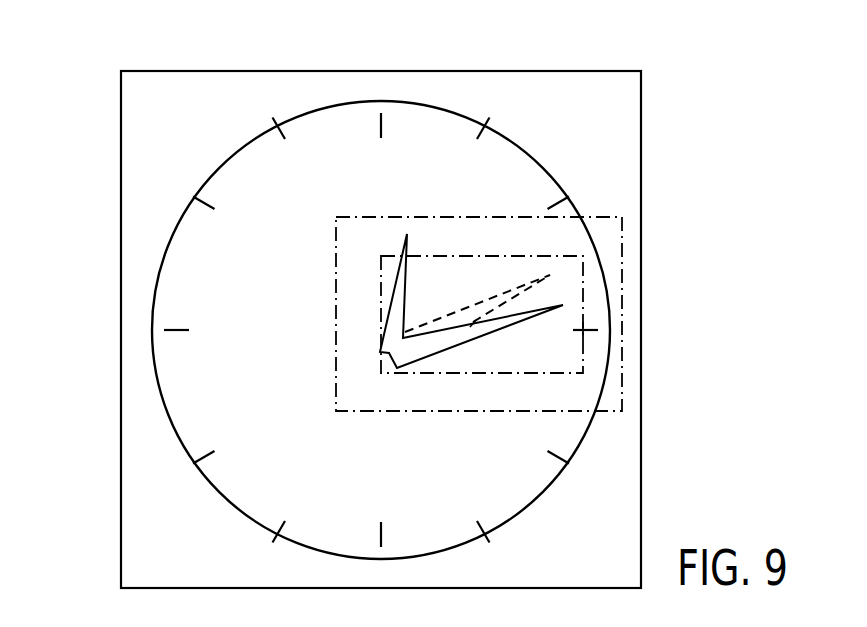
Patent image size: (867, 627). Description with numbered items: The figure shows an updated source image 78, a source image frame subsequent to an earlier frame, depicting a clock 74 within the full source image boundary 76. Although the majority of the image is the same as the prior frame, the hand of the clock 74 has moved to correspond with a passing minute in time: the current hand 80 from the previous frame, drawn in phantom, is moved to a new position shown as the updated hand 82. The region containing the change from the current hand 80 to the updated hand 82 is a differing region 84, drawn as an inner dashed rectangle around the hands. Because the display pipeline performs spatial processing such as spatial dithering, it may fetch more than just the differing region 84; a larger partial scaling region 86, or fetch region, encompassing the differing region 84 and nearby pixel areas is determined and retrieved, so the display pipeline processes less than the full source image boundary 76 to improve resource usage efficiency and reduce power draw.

The clock 74 is at (180, 174).
The full source image boundary 76 is at (382, 70).
The updated source image 78 is at (71, 188).
The current hand 80 is at (480, 303).
The updated hand 82 is at (433, 362).
The differing region 84 is at (583, 316).
The partial scaling region 86 is at (478, 411).